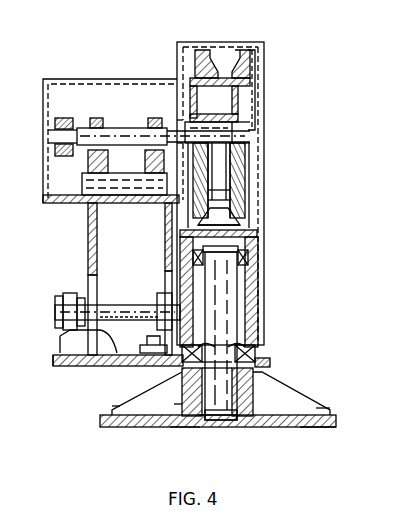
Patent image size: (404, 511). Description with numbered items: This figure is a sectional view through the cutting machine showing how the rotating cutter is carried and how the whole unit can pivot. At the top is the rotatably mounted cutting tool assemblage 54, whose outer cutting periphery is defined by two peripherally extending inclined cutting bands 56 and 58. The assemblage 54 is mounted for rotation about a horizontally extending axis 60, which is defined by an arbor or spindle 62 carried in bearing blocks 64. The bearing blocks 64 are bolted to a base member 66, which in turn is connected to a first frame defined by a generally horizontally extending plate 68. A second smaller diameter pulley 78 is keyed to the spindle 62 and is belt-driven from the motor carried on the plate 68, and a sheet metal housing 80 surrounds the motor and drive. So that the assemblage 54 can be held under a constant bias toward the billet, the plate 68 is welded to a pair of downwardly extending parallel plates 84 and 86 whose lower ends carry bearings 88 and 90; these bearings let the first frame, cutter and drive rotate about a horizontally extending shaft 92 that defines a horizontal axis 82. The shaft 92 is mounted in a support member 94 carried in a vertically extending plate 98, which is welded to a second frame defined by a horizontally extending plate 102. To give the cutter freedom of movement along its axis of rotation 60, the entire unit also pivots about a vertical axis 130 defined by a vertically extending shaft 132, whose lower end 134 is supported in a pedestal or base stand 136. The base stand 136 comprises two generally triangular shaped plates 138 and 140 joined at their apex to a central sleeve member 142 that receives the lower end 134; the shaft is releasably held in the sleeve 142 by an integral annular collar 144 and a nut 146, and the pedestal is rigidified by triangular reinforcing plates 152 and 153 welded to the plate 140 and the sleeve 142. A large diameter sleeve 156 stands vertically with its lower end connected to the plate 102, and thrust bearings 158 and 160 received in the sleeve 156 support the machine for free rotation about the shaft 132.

The cutting tool assemblage 54 is at (252, 62).
The inclined cutting band 56 is at (243, 50).
The inclined cutting band 58 is at (206, 50).
The horizontally extending axis 60 is at (131, 128).
The arbor or spindle 62 is at (112, 126).
The bearing blocks 64 is at (145, 160).
The base member 66 is at (82, 183).
The horizontally extending plate 68 is at (46, 203).
The second smaller diameter pulley 78 is at (55, 122).
The sheet metal housing 80 is at (180, 42).
The horizontally extending axis 82 is at (125, 312).
The downwardly extending parallel plate 84 is at (88, 247).
The downwardly extending parallel plate 86 is at (165, 243).
The bearing 88 is at (112, 353).
The bearing 90 is at (188, 228).
The horizontally extending shaft 92 is at (63, 306).
The support member 94 is at (63, 325).
The vertically extending plate 98 is at (53, 356).
The horizontally extending plate 102 is at (58, 366).
The vertical axis 130 is at (230, 420).
The vertically extending shaft 132 is at (228, 314).
The lower end of shaft 134 is at (253, 404).
The pedestal or base stand 136 is at (320, 392).
The triangular shaped plate 138 is at (297, 427).
The triangular shaped plate 140 is at (148, 427).
The central sleeve member 142 is at (182, 404).
The integral annular collar 144 is at (258, 355).
The nut 146 is at (186, 427).
The reinforcing plate 152 is at (112, 406).
The reinforcing plate 153 is at (325, 408).
The large diameter sleeve 156 is at (258, 292).
The thrust bearing 158 is at (248, 258).
The thrust bearing 160 is at (252, 347).